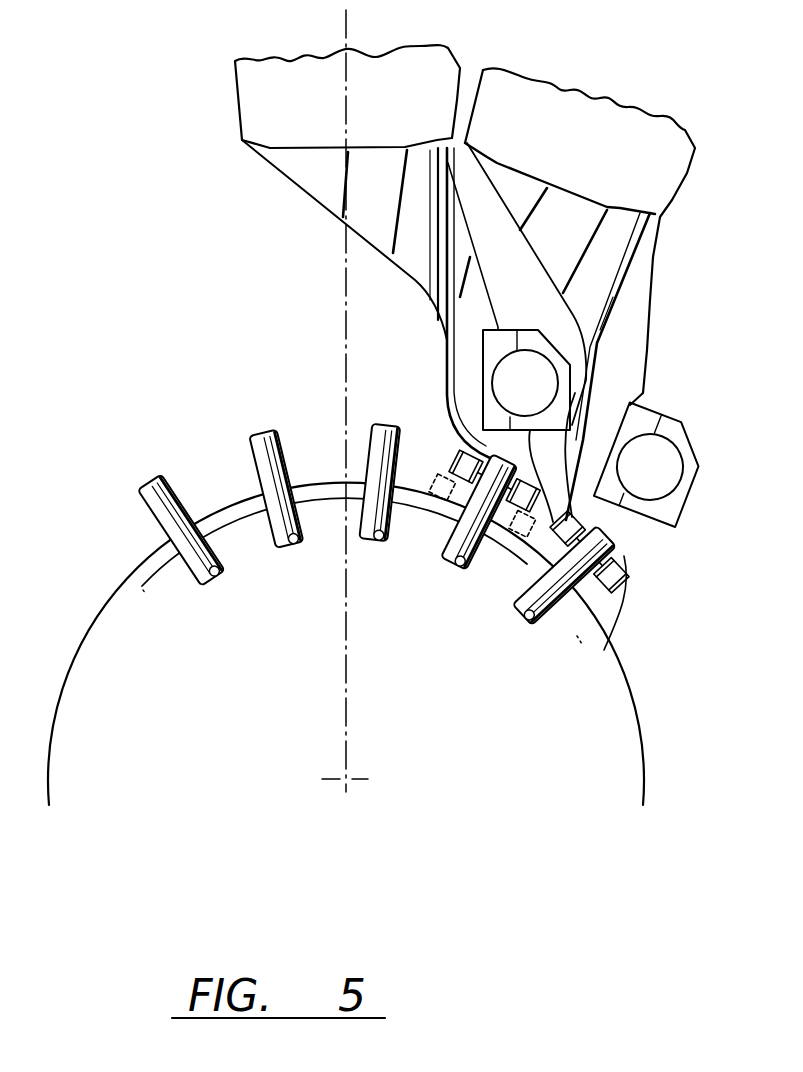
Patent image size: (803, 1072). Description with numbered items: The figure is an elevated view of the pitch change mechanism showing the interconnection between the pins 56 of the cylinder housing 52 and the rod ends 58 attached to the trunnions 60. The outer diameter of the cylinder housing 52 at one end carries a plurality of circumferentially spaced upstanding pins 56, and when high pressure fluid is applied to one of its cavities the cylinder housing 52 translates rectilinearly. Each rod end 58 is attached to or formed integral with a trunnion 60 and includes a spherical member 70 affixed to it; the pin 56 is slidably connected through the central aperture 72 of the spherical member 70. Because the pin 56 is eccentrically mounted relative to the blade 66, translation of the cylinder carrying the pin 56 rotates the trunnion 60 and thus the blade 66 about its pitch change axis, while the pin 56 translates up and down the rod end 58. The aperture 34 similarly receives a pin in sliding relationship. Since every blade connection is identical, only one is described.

The aperture 34 is at (442, 436).
The cylinder housing 52 is at (112, 593).
The pins 56 is at (141, 500).
The rod end 58 is at (626, 560).
The trunnion 60 is at (315, 203).
The blade 66 is at (648, 346).
The spherical member 70 is at (437, 540).
The central aperture 72 is at (586, 588).